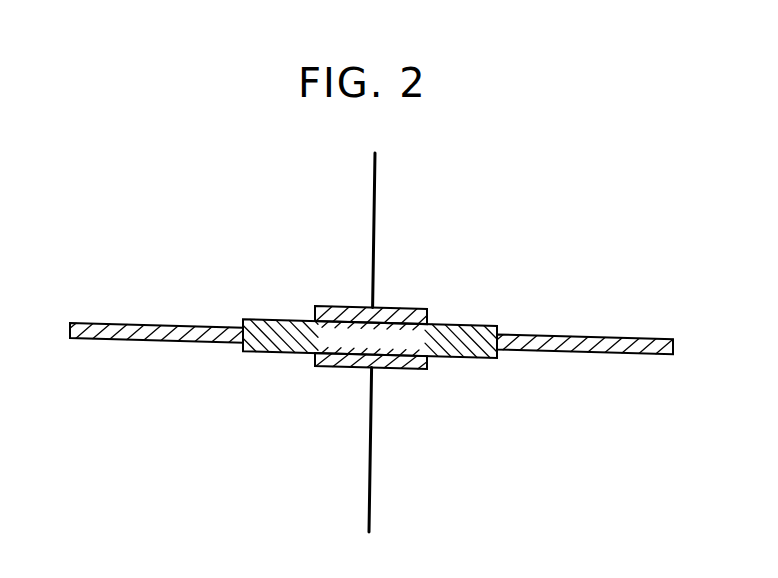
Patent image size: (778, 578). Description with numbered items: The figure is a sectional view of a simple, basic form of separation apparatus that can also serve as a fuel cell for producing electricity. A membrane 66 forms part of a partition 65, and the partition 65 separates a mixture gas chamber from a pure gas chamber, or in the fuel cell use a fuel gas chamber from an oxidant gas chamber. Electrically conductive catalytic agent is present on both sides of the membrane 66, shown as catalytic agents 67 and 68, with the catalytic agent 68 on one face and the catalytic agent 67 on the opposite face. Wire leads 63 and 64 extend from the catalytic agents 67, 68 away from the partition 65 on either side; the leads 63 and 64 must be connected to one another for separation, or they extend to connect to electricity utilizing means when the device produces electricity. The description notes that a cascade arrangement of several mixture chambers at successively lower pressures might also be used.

The wire lead 63 is at (409, 230).
The wire lead 64 is at (340, 450).
The partition 65 is at (360, 345).
The membrane 66 is at (377, 320).
The catalytic agent 67 is at (351, 380).
The catalytic agent 68 is at (355, 287).